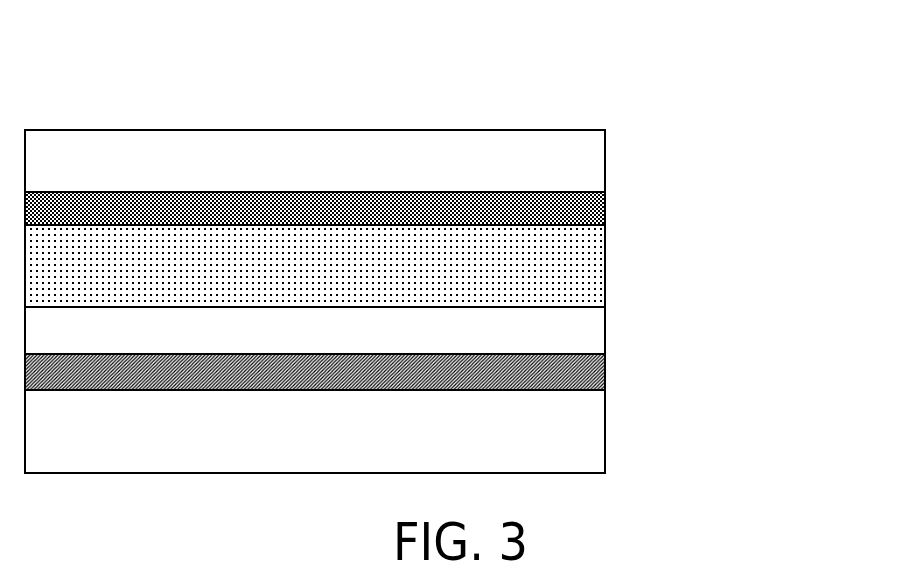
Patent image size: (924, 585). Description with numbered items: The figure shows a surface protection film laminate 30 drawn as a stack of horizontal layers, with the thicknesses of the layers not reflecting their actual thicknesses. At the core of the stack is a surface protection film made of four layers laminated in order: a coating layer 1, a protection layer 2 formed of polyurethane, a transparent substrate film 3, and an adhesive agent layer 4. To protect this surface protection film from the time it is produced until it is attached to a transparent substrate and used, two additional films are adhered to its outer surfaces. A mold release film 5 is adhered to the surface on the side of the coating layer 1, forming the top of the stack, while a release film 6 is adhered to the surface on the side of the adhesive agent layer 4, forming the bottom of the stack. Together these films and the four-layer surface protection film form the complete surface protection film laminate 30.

The surface protection film laminate 30 is at (617, 75).
The mold release film 5 is at (580, 155).
The coating layer 1 is at (588, 210).
The protection layer 2 is at (582, 263).
The transparent substrate film 3 is at (582, 327).
The adhesive agent layer 4 is at (587, 383).
The release film 6 is at (580, 448).